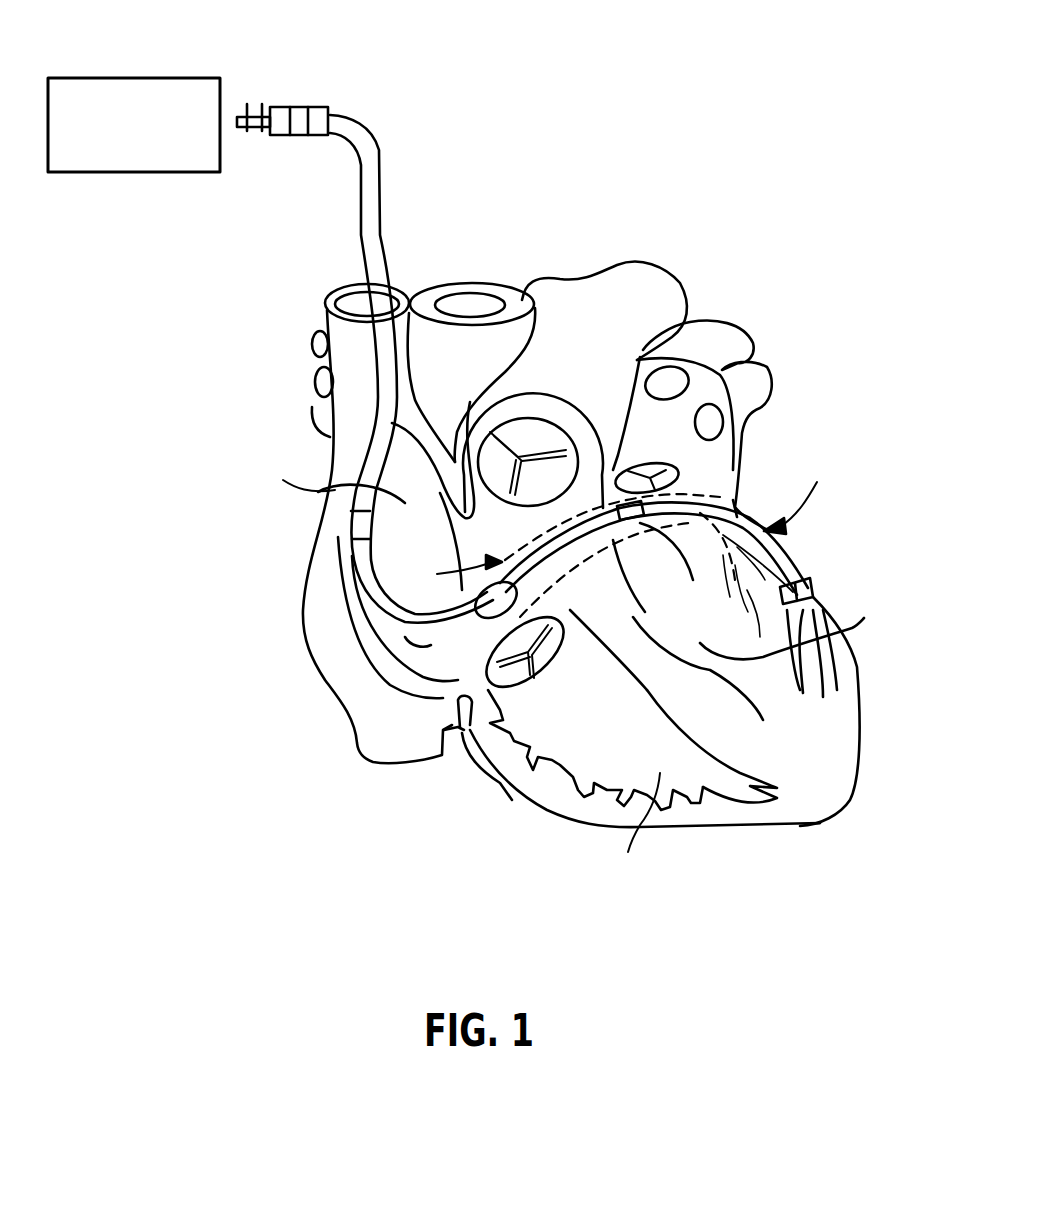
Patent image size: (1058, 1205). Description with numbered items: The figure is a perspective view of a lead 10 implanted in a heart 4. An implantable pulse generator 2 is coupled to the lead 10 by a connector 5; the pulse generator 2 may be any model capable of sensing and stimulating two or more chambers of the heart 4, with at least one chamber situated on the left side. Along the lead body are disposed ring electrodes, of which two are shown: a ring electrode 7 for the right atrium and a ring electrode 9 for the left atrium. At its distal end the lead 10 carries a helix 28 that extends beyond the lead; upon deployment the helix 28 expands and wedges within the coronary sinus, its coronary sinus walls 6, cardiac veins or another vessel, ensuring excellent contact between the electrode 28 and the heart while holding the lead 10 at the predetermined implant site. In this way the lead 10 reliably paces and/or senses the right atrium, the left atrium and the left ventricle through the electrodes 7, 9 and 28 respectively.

The implantable pulse generator 2 is at (158, 78).
The heart 4 is at (750, 253).
The connector 5 is at (283, 107).
The coronary sinus walls 6 is at (641, 565).
The ring electrode 7 is at (372, 521).
The ring electrode 9 is at (709, 554).
The lead 10 is at (350, 555).
The helix 28 is at (813, 600).